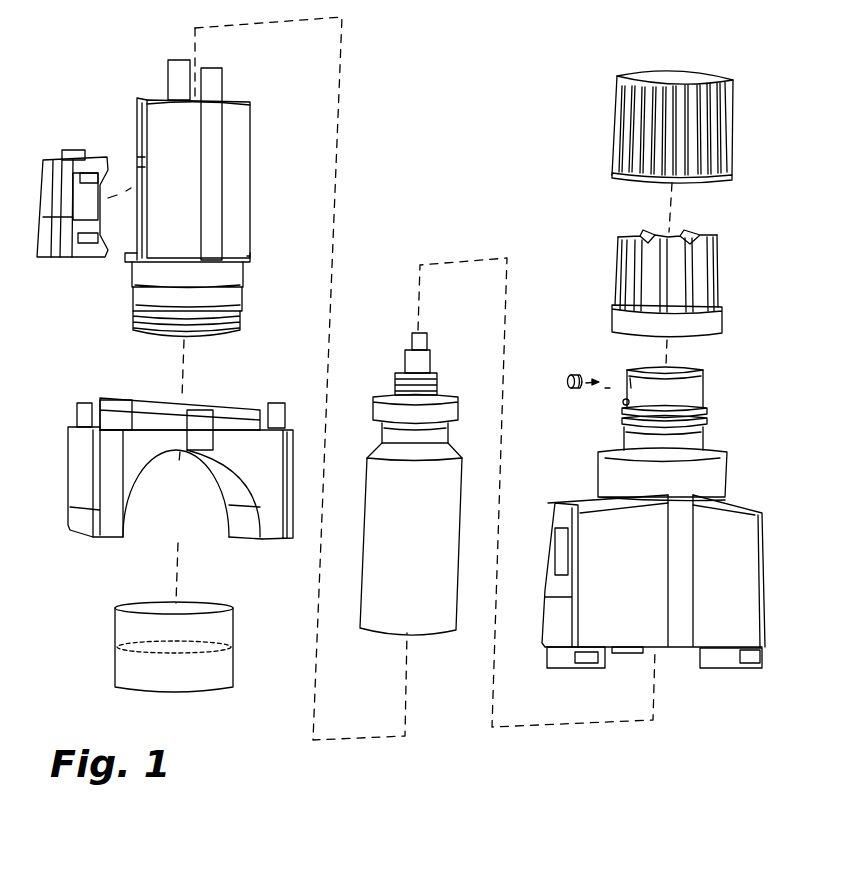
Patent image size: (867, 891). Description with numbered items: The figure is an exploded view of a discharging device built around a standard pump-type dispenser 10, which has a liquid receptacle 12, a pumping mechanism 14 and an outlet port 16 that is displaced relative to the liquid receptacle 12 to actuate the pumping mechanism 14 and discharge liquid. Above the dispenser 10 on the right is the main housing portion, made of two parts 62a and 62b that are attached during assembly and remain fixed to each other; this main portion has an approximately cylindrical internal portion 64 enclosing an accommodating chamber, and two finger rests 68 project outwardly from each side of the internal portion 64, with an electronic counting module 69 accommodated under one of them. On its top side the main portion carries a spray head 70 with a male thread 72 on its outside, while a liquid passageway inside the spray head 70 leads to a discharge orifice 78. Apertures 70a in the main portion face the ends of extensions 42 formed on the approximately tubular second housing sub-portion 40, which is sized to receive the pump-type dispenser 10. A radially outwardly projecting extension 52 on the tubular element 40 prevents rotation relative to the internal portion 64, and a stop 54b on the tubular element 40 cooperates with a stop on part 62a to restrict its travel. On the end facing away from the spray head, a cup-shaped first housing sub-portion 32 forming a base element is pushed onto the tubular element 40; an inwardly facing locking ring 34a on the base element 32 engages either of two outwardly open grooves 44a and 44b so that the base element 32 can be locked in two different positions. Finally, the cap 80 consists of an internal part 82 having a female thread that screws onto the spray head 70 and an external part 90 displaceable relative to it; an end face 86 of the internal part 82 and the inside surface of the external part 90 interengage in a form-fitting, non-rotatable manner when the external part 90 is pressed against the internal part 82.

The pump-type dispenser 10 is at (383, 363).
The liquid receptacle 12 is at (423, 554).
The pumping mechanism 14 is at (437, 407).
The outlet port 16 is at (425, 340).
The first housing sub-portion 32 is at (107, 636).
The locking ring 34a is at (128, 652).
The second housing sub-portion 40 is at (147, 78).
The extensions 42 is at (215, 83).
The groove 44a is at (133, 325).
The groove 44b is at (135, 310).
The radially outwardly projecting extension 52 is at (130, 233).
The stop member 54b is at (250, 261).
The part of main portion 62a is at (778, 625).
The part of main portion 62b is at (57, 458).
The internal portion 64 is at (680, 613).
The finger rests 68 is at (590, 507).
The electronic counting module 69 is at (83, 143).
The spray head 70 is at (705, 387).
The apertures 70a is at (727, 452).
The male thread 72 is at (705, 413).
The discharge orifice 78 is at (567, 375).
The cap 80 is at (743, 78).
The internal part 82 is at (595, 268).
The end face 86 is at (640, 232).
The external part 90 is at (598, 104).